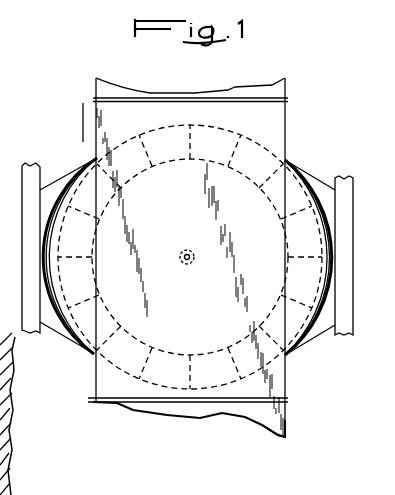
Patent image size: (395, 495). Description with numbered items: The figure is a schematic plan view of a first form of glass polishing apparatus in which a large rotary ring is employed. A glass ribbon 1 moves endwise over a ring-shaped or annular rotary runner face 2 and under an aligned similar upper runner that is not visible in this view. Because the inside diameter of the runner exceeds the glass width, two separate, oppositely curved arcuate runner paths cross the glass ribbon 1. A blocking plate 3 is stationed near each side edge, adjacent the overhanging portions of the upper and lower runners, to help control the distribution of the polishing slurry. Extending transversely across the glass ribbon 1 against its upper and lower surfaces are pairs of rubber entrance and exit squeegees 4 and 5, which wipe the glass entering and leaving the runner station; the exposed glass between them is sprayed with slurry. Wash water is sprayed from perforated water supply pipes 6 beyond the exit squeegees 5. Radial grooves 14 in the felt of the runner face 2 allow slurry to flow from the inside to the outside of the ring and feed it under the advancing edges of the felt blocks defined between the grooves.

The glass ribbon 1 is at (285, 118).
The rotary runner face 2 is at (285, 135).
The blocking plate 3 is at (62, 170).
The entrance squeegees 4 is at (301, 101).
The exit squeegees 5 is at (303, 410).
The perforated water supply pipes 6 is at (288, 418).
The radial grooves 14 is at (183, 158).